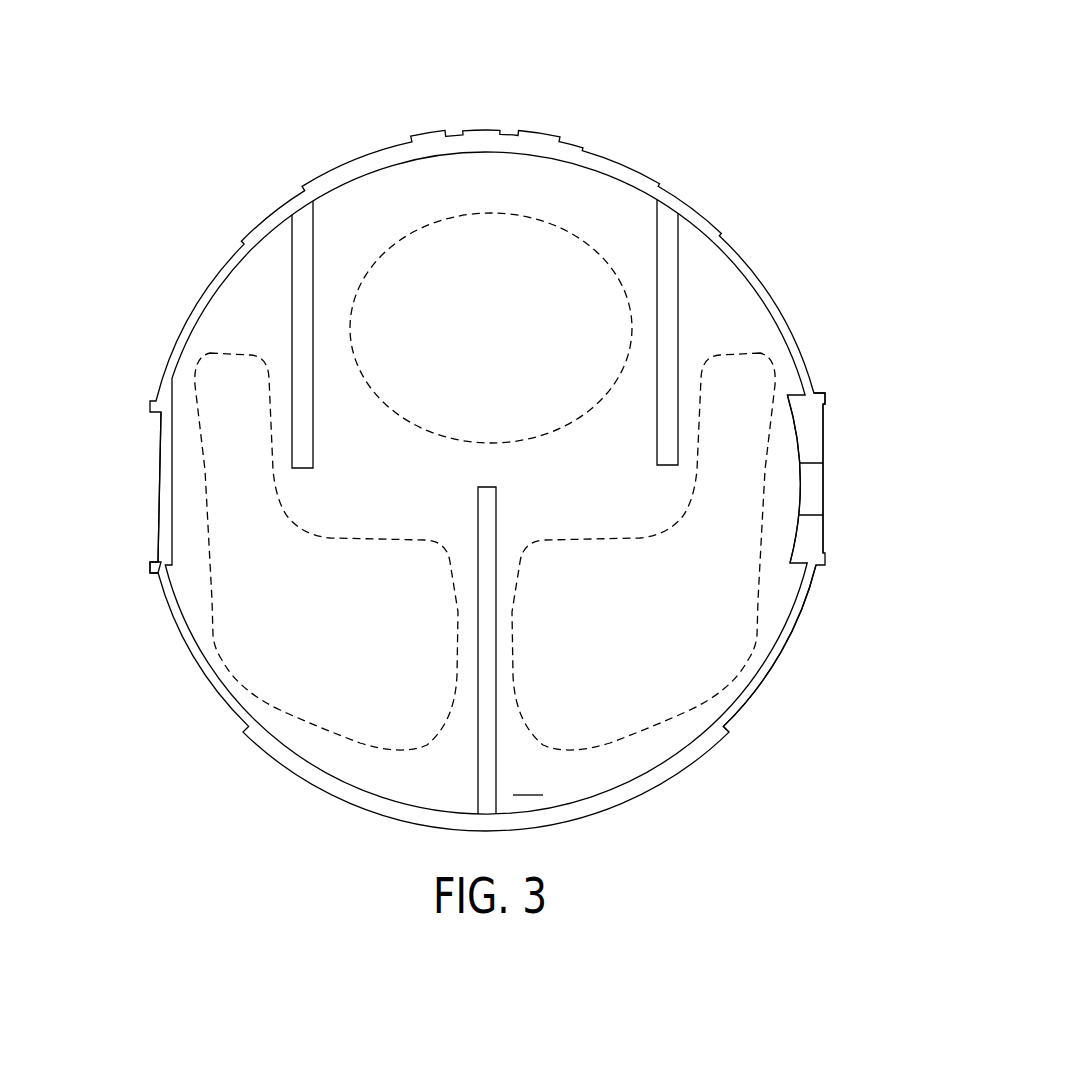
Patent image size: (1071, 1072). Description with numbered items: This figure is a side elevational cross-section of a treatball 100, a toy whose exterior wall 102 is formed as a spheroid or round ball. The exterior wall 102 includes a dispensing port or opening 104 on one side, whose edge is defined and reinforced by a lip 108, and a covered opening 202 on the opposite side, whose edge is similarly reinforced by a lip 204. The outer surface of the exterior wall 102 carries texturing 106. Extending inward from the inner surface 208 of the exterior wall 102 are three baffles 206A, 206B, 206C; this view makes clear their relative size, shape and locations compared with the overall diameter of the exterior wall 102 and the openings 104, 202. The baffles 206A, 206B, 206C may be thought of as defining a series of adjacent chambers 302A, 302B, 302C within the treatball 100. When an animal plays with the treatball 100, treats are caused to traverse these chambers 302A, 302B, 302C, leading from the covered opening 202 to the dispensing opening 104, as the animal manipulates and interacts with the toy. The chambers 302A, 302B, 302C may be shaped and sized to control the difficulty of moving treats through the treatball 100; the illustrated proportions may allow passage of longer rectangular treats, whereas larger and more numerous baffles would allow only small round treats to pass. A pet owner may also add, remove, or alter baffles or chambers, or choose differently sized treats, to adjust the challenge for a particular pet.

The treatball 100 is at (676, 94).
The exterior wall 102 is at (196, 316).
The opening 104 is at (121, 488).
The lip 108 is at (152, 568).
The lip 204 is at (826, 398).
The covered opening 202 is at (843, 472).
The texturing 106 is at (736, 716).
The baffle 206A is at (318, 432).
The baffle 206B is at (498, 530).
The baffle 206C is at (656, 432).
The chamber 302A is at (320, 728).
The chamber 302B is at (452, 443).
The chamber 302C is at (612, 748).
The inner surface 208 is at (528, 782).